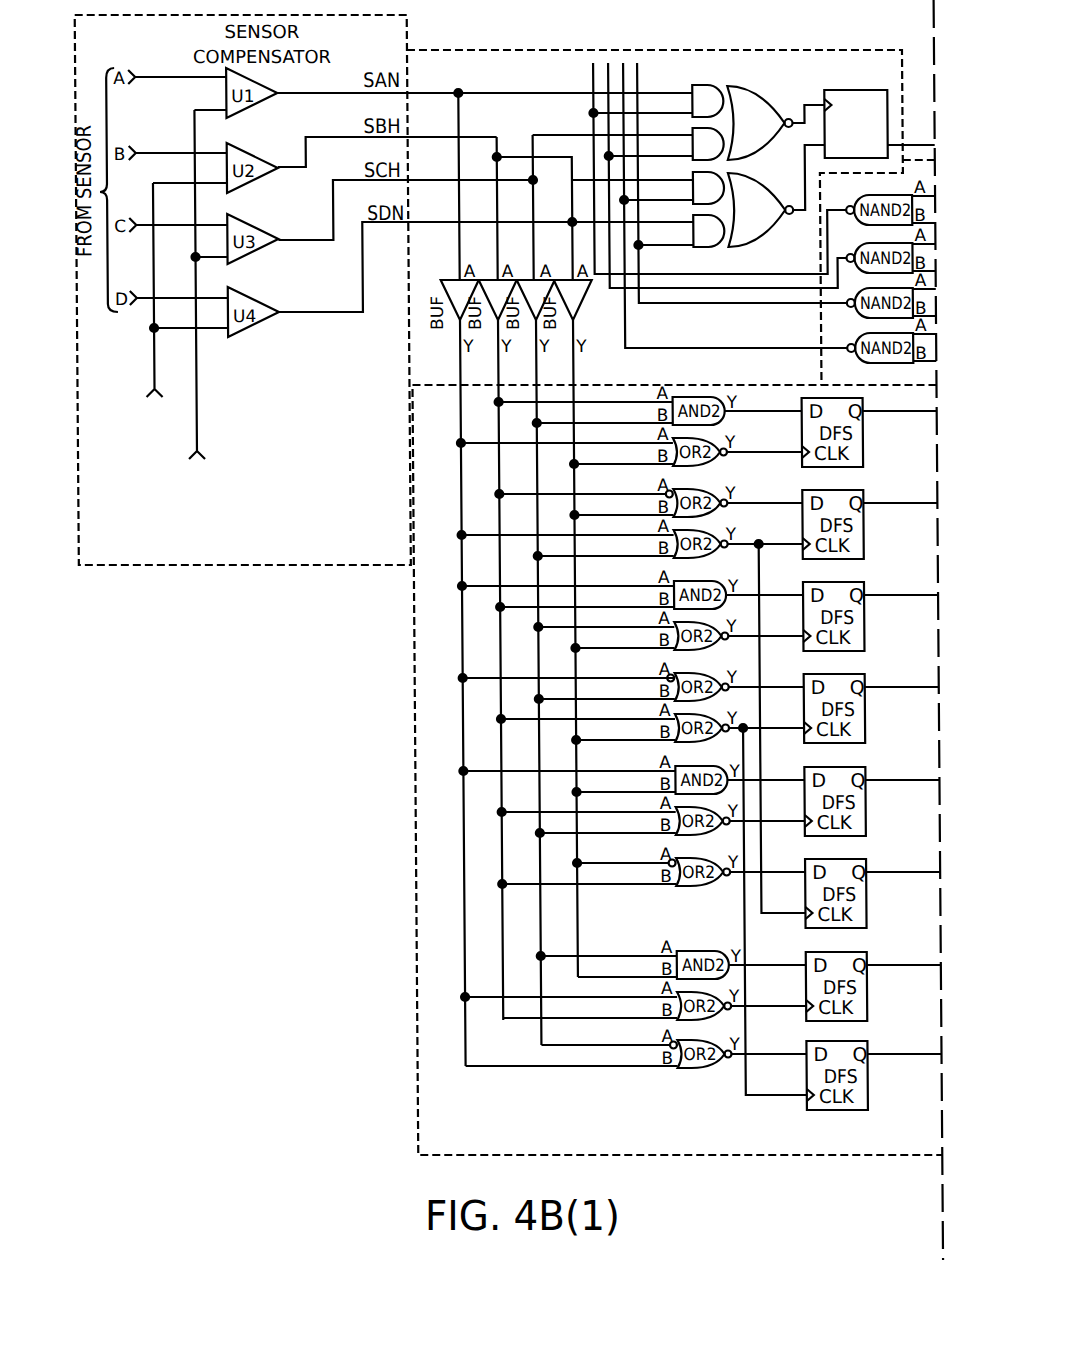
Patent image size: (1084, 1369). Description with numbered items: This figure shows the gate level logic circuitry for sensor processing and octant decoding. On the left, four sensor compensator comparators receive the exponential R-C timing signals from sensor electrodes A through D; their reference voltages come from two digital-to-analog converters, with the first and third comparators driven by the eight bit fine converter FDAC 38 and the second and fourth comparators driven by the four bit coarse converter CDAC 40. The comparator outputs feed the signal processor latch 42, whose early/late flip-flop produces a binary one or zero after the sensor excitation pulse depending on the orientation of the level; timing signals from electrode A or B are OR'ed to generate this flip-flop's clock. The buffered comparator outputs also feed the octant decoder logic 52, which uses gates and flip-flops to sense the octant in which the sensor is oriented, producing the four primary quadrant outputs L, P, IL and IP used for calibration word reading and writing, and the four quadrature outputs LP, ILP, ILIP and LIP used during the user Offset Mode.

The signal processor latch 42 is at (511, 50).
The octant decoder logic 52 is at (678, 1155).
The CDAC 40 is at (153, 402).
The FDAC 38 is at (198, 394).